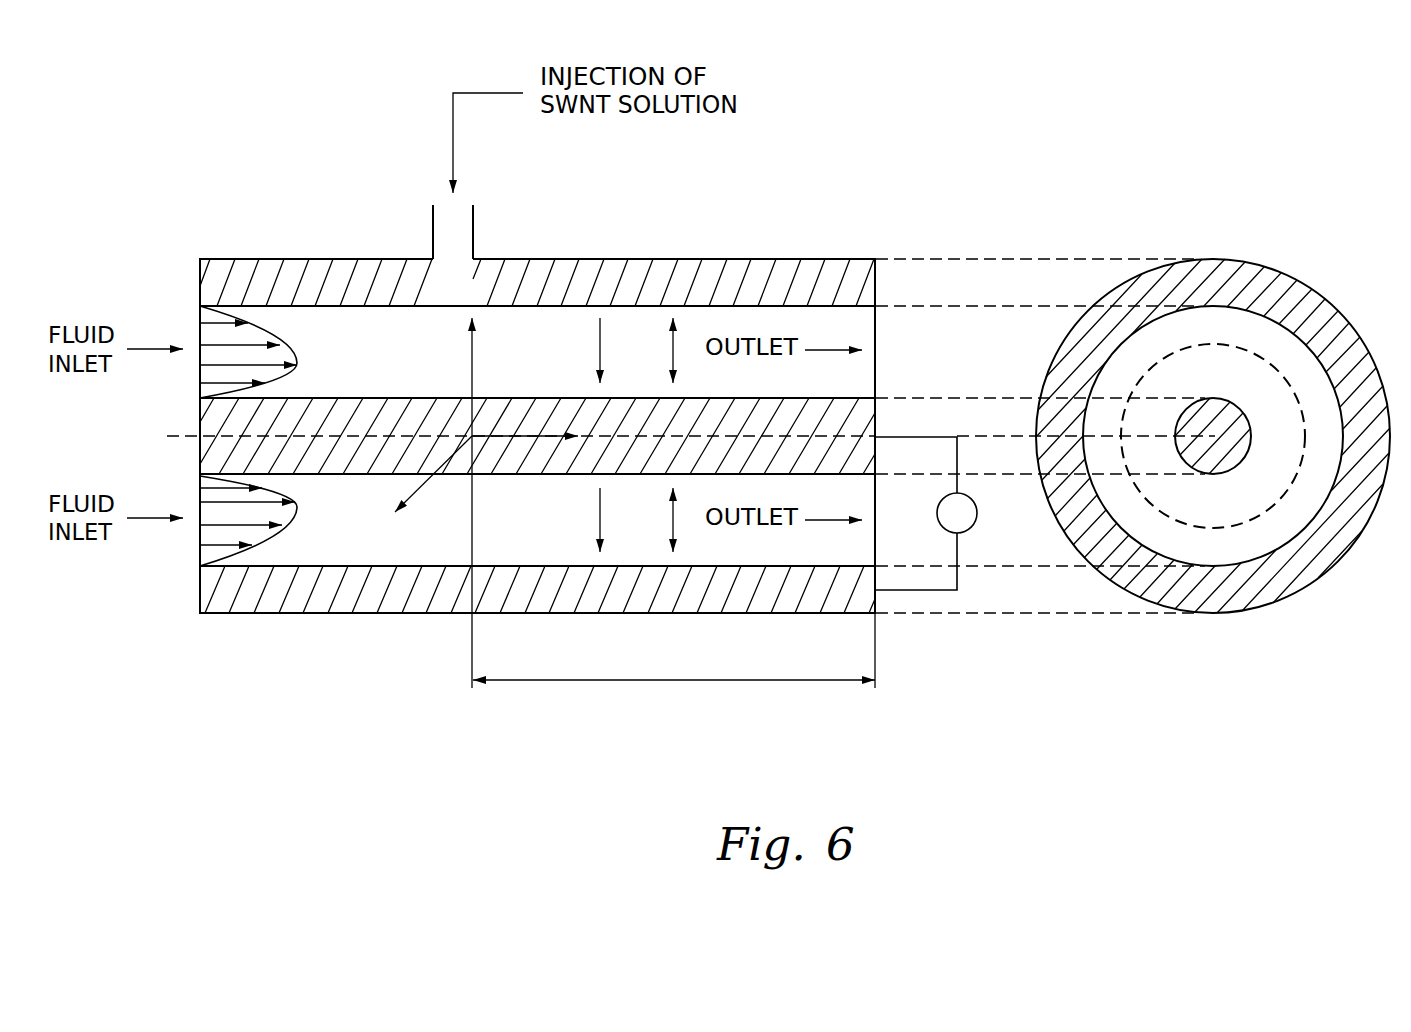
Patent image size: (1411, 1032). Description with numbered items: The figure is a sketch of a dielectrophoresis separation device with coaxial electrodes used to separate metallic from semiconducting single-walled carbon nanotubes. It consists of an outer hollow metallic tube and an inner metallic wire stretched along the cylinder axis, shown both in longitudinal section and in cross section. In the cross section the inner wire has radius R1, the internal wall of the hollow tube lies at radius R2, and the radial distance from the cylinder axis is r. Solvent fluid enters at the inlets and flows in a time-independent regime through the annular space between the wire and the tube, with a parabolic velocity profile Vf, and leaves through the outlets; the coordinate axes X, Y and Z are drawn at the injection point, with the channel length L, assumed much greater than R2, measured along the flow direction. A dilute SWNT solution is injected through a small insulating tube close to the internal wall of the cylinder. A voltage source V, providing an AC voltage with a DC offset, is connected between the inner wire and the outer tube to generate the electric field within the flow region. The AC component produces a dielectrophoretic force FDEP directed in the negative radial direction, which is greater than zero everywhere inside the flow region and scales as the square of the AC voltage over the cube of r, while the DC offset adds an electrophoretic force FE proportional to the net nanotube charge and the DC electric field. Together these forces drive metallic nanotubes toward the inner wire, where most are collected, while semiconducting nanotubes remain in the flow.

The fluid velocity profile Vf is at (265, 436).
The Z axis Z is at (490, 503).
The Y axis Y is at (525, 418).
The X axis X is at (433, 489).
The dielectrophoretic force FDEP is at (567, 435).
The electrophoretic force FE is at (654, 435).
The voltage source V is at (926, 513).
The channel length L is at (674, 651).
The outer hollow tube inner radius R2 is at (1250, 315).
The inner wire radius R1 is at (1213, 436).
The radial distance r is at (1213, 436).